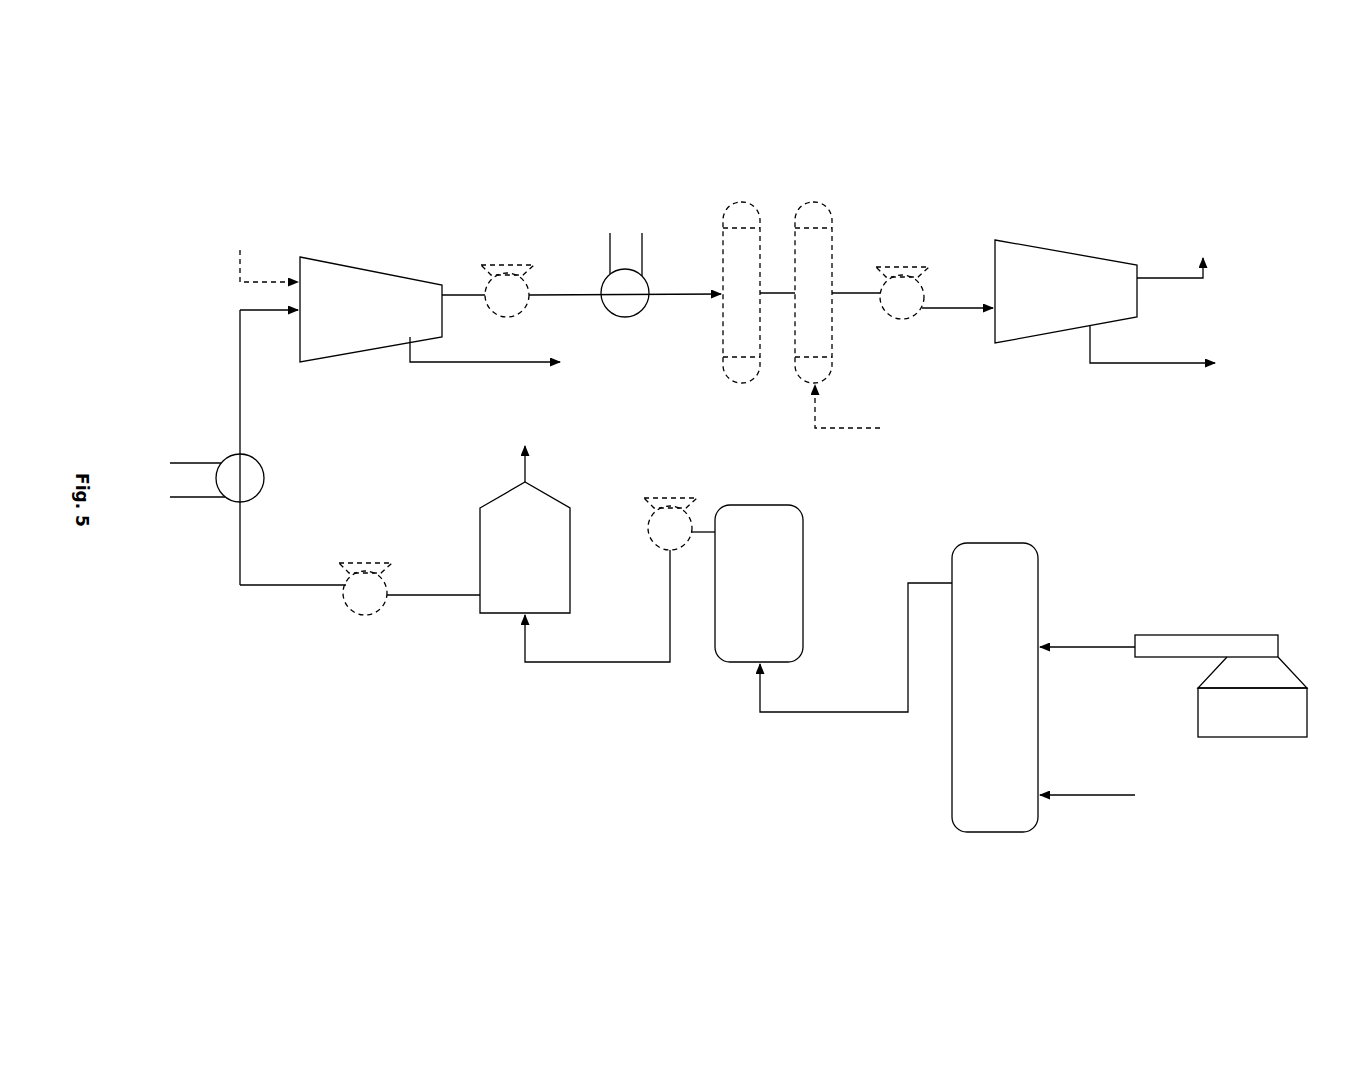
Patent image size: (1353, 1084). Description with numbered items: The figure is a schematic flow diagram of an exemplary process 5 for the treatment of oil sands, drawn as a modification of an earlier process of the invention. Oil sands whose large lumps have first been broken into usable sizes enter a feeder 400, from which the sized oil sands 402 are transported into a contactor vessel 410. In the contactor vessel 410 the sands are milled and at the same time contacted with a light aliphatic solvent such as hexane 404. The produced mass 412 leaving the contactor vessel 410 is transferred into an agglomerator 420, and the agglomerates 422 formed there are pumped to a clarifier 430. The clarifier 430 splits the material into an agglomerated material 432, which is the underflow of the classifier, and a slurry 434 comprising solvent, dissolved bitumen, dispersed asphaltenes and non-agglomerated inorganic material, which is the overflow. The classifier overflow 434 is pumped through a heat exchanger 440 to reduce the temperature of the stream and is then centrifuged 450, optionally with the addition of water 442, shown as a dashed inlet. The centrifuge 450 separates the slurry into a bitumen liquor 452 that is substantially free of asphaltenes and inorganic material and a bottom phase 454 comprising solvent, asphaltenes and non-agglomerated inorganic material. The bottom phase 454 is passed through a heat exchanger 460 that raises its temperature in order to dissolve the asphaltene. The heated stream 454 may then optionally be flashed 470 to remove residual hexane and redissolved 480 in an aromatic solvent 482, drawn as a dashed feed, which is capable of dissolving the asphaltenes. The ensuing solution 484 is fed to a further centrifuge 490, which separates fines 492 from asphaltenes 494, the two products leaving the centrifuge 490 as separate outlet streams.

The process 5 is at (372, 776).
The feeder 400 is at (1268, 737).
The sized oil sands 402 is at (1087, 659).
The light aliphatic solvent 404 is at (1087, 808).
The contactor vessel 410 is at (990, 825).
The produced mass 412 is at (856, 657).
The agglomerator 420 is at (803, 548).
The agglomerates 422 is at (620, 591).
The clarifier 430 is at (565, 565).
The agglomerated material 432 is at (545, 464).
The slurry 434 is at (360, 590).
The heat exchanger 440 is at (264, 488).
The water 442 is at (248, 266).
The centrifuge 450 is at (358, 258).
The bitumen liquor 452 is at (485, 360).
The bottom phase 454 is at (581, 291).
The heat exchanger 460 is at (610, 272).
The flash 470 is at (733, 202).
The redissolving step 480 is at (813, 202).
The aromatic solvent 482 is at (847, 418).
The solution 484 is at (934, 299).
The centrifuge 490 is at (1020, 240).
The fines 492 is at (1152, 356).
The asphaltenes 494 is at (1179, 255).